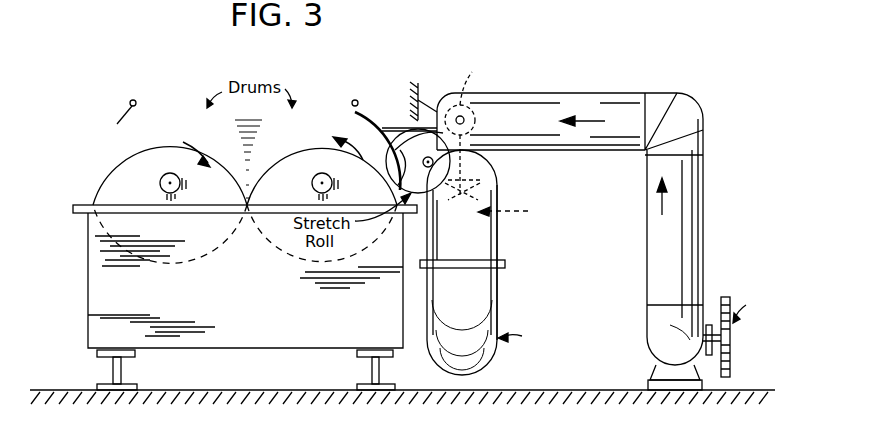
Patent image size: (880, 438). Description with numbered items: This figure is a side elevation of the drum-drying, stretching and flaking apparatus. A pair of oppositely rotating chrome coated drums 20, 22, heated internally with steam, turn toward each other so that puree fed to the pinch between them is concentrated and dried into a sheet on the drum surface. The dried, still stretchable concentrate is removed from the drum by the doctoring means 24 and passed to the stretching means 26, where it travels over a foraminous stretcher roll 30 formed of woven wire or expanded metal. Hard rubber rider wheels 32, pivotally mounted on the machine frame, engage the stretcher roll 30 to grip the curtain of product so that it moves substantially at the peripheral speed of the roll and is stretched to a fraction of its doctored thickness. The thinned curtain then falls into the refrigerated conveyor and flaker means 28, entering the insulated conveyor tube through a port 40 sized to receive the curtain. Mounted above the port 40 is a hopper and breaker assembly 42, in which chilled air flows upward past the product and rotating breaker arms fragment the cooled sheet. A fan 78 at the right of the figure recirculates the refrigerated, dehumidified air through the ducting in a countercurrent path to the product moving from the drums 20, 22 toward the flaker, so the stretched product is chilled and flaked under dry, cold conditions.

The drum 20 is at (162, 162).
The drum 22 is at (306, 162).
The doctoring means 24 is at (383, 122).
The stretching means 26 is at (440, 132).
The refrigerated conveyor and flaker means 28 is at (521, 255).
The foraminous stretcher roll 30 is at (406, 172).
The rider wheels 32 is at (471, 95).
The port 40 is at (503, 269).
The hopper and breaker assembly 42 is at (497, 239).
The fan 78 is at (732, 355).